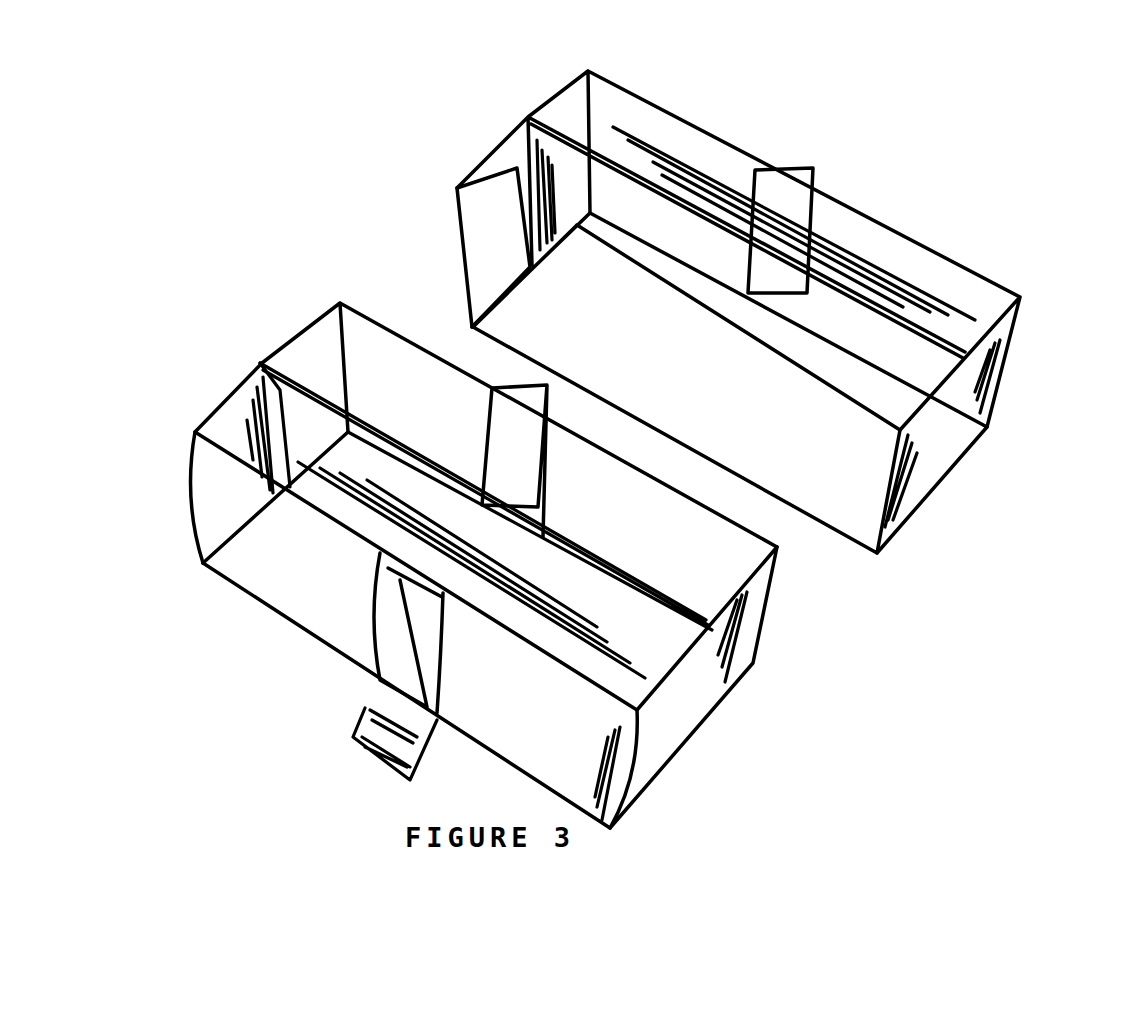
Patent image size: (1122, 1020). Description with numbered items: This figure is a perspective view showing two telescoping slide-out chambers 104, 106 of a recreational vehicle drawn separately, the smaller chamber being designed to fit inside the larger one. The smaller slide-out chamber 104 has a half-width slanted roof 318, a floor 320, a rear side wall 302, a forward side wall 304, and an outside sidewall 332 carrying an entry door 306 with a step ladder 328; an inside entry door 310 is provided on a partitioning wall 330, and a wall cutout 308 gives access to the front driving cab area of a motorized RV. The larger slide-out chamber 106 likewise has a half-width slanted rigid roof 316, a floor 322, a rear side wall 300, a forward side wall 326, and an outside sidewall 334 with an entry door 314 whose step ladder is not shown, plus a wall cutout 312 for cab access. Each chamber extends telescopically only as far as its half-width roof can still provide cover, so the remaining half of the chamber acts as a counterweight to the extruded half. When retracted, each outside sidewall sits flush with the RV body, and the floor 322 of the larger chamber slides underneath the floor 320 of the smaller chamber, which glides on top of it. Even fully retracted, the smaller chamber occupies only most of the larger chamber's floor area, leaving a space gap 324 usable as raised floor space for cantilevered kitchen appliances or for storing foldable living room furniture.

The slide-out chamber 104 is at (183, 580).
The slide-out chamber 106 is at (980, 248).
The rear side wall 300 is at (920, 480).
The rear side wall 302 is at (753, 663).
The forward side wall 304 is at (205, 485).
The entry door 306 is at (397, 663).
The wall cutout 308 is at (318, 383).
The inside entry door 310 is at (507, 465).
The wall cutout 312 is at (503, 205).
The entry door 314 is at (790, 197).
The half-width slanted rigid roof 316 is at (673, 160).
The half-width slanted roof 318 is at (560, 598).
The floor 320 is at (297, 607).
The floor 322 is at (827, 493).
The space gap 324 is at (847, 362).
The forward side wall 326 is at (528, 127).
The step ladder 328 is at (353, 737).
The partitioning wall 330 is at (380, 372).
The outside sidewall 332 is at (630, 807).
The outside sidewall 334 is at (1007, 365).